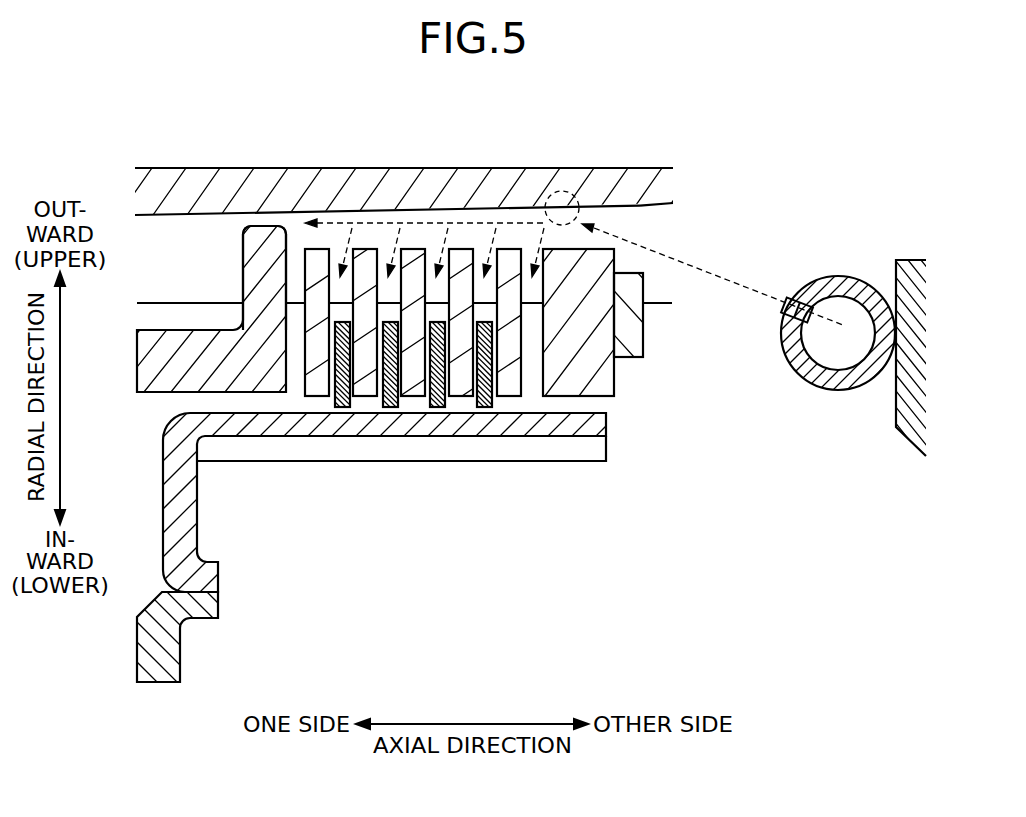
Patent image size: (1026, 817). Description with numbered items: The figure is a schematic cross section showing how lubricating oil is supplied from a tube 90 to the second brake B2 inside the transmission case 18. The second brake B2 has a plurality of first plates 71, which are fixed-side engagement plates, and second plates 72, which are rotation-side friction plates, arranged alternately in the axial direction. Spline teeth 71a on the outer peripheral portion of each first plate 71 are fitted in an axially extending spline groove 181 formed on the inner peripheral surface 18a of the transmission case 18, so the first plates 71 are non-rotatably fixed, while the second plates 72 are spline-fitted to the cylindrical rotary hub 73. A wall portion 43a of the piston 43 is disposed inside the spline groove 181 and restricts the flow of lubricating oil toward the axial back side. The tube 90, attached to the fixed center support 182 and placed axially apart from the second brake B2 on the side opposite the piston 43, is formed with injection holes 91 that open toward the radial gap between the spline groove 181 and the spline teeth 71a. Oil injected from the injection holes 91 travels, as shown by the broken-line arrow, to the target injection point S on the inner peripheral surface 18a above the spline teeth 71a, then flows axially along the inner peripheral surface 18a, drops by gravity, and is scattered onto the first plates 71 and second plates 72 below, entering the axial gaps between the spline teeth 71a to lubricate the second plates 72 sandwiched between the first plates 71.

The transmission case 18 is at (168, 164).
The spline groove 181 is at (212, 240).
The inner peripheral surface 18a is at (648, 203).
The piston 43 is at (160, 374).
The wall portion 43a is at (265, 226).
The first plate 71 is at (365, 397).
The spline teeth 71a is at (367, 248).
The second plate 72 is at (437, 408).
The hub 73 is at (607, 428).
The target injection point S is at (562, 191).
The tube 90 is at (862, 268).
The injection holes 91 is at (789, 296).
The center support 182 is at (903, 440).
The second brake B2 is at (664, 414).